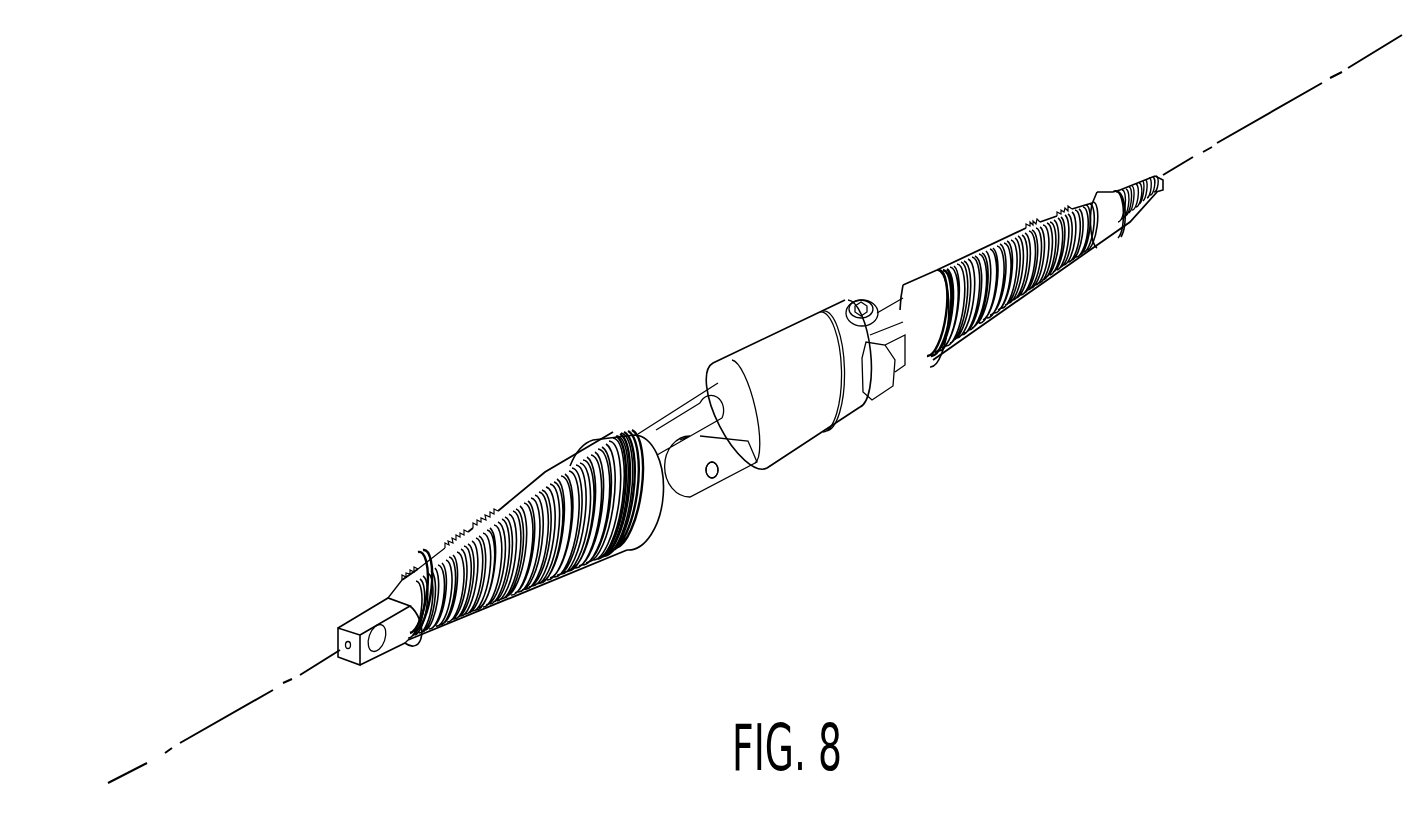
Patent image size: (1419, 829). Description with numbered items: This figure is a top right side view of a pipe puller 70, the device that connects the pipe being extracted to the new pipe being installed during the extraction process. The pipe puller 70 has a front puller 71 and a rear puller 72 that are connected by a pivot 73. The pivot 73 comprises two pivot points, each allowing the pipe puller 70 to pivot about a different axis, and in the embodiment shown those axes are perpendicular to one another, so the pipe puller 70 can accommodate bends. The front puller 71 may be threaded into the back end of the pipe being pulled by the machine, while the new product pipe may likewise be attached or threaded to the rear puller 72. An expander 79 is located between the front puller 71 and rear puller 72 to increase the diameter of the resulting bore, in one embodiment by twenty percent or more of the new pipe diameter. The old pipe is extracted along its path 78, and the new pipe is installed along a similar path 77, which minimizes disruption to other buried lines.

The pipe puller 70 is at (465, 290).
The front puller 71 is at (965, 190).
The rear puller 72 is at (438, 498).
The pivot 73 is at (848, 303).
The path 77 is at (1280, 105).
The path 78 is at (213, 722).
The expander 79 is at (717, 320).